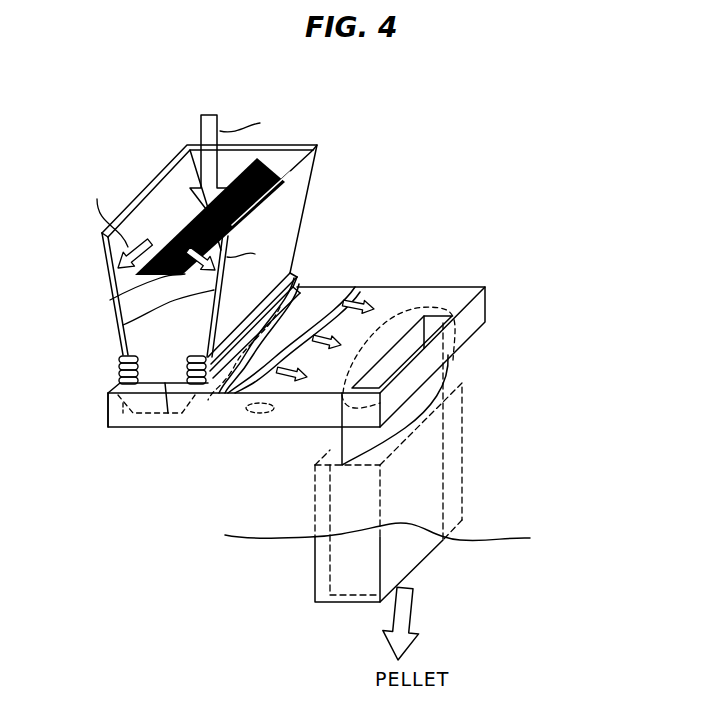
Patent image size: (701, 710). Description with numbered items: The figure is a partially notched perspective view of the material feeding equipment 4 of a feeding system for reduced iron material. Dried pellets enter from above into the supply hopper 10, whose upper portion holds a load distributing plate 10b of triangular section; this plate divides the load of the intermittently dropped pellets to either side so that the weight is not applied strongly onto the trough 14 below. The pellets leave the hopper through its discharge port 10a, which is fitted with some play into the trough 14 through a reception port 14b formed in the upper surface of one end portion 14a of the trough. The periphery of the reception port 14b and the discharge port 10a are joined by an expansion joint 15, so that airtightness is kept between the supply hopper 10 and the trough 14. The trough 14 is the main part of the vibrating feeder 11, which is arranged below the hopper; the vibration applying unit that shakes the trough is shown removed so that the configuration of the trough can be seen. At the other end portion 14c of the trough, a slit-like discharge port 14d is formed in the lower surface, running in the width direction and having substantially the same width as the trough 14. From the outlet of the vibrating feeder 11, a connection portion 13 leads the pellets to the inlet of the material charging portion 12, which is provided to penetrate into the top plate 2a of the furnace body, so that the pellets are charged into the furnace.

The material feeding equipment 4 is at (508, 155).
The supply hopper 10 is at (106, 250).
The discharge port 10a is at (137, 433).
The load distributing plate 10b is at (110, 300).
The vibrating feeder 11 is at (226, 454).
The material charging portion 12 is at (478, 492).
The connection portion 13 is at (466, 357).
The trough 14 is at (497, 280).
The one end portion of the trough 14a is at (138, 440).
The reception port 14b is at (166, 383).
The other end portion of the trough 14c is at (463, 287).
The slit-like discharge port 14d is at (420, 318).
The expansion joint 15 is at (118, 372).
The top plate 2a is at (270, 517).